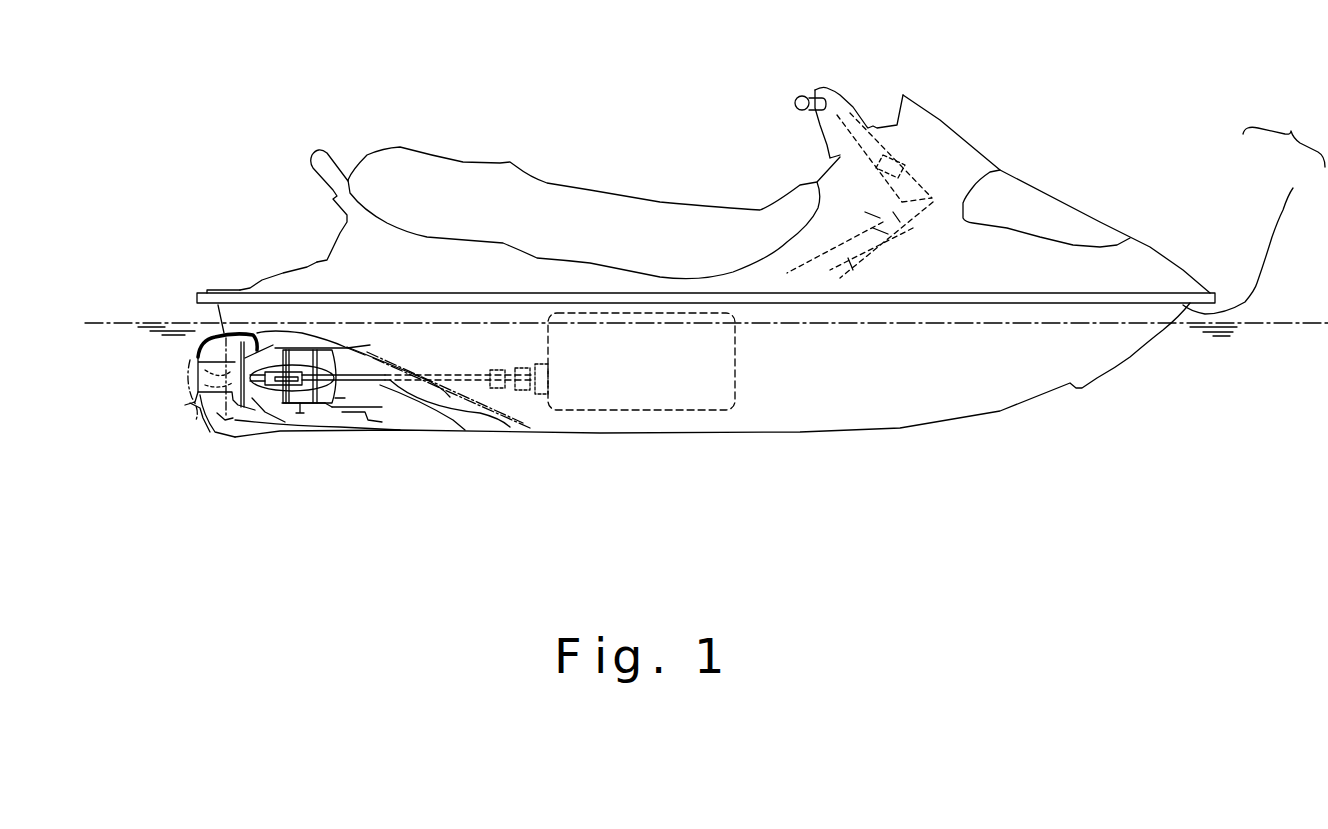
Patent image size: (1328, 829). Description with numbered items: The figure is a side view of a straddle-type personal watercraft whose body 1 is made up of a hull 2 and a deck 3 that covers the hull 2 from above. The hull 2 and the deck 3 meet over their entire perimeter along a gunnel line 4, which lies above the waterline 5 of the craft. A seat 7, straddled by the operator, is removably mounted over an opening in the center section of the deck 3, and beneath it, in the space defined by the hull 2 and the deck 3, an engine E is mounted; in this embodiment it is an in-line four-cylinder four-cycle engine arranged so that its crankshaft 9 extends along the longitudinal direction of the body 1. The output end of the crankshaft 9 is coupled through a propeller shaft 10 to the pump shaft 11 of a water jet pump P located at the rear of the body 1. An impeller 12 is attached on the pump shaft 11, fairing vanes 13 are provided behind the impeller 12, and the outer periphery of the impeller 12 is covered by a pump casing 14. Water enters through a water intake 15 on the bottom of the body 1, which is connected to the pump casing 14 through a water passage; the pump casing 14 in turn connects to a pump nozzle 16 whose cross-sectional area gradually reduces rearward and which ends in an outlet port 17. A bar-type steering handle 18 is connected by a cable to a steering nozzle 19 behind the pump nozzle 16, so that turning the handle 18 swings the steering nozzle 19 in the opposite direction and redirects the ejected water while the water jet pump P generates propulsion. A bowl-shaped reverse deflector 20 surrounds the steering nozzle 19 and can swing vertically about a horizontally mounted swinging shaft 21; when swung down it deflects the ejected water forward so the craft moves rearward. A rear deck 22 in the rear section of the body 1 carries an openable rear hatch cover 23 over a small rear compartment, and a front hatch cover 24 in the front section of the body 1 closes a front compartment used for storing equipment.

The body 1 is at (1284, 130).
The hull 2 is at (744, 299).
The deck 3 is at (1187, 283).
The gunnel line 4 is at (180, 290).
The waterline 5 is at (123, 323).
The seat 7 is at (383, 165).
The crankshaft 9 is at (543, 380).
The propeller shaft 10 is at (388, 373).
The pump shaft 11 is at (273, 407).
The impeller 12 is at (317, 400).
The fairing vanes 13 is at (302, 353).
The pump casing 14 is at (308, 405).
The water intake 15 is at (453, 420).
The pump nozzle 16 is at (247, 423).
The outlet port 17 is at (190, 400).
The steering handle 18 is at (797, 97).
The steering nozzle 19 is at (217, 413).
The reverse deflector 20 is at (203, 335).
The swinging shaft 21 is at (190, 377).
The rear deck 22 is at (220, 292).
The rear hatch cover 23 is at (239, 290).
The front hatch cover 24 is at (1028, 200).
The engine E is at (735, 380).
The water jet pump P is at (285, 347).